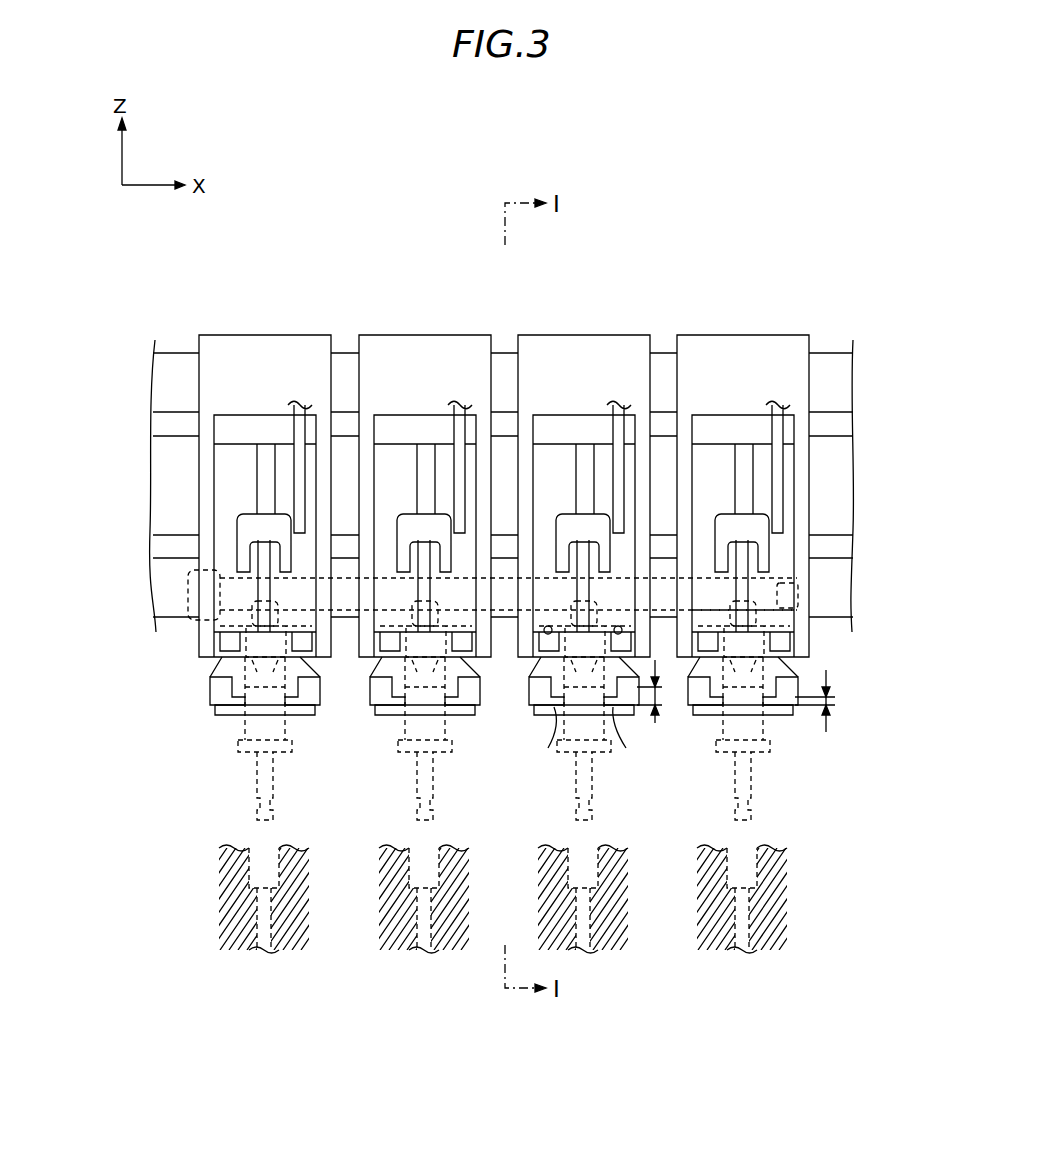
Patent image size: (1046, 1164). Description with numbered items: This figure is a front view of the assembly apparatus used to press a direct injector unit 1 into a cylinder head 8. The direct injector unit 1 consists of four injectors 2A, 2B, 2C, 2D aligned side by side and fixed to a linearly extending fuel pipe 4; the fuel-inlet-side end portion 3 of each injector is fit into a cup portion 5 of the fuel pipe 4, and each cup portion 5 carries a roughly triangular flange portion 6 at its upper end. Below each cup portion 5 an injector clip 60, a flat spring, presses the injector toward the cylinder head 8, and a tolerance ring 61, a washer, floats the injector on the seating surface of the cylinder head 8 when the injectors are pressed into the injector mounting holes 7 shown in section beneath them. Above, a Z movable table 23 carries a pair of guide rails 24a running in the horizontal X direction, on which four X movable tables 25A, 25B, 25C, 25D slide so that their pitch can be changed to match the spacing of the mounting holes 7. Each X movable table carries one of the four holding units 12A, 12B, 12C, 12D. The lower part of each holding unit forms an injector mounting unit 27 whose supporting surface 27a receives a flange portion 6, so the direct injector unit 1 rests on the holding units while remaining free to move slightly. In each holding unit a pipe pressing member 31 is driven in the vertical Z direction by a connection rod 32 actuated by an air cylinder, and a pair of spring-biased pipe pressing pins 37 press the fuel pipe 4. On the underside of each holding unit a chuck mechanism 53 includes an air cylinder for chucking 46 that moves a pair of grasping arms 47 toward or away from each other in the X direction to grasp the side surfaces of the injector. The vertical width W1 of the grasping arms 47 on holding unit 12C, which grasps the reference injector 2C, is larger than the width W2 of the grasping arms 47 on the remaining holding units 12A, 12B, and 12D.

The direct injector unit 1 is at (186, 584).
The first injector 2A is at (299, 780).
The second injector 2B is at (458, 780).
The third injector 2C is at (618, 780).
The fourth injector 2D is at (788, 786).
The fuel-inlet-side end portion 3 is at (816, 678).
The fuel pipe 4 is at (839, 580).
The cup portion 5 is at (800, 648).
The flange portion 6 is at (797, 628).
The injector mounting hole 7 is at (776, 899).
The cylinder head 8 is at (737, 911).
The holding unit 12A is at (247, 370).
The holding unit 12B is at (407, 370).
The holding unit 12C is at (566, 370).
The holding unit 12D is at (725, 370).
The Z movable table 23 is at (175, 380).
The guide rail 24a is at (158, 428).
The X movable table 25A is at (265, 459).
The X movable table 25B is at (425, 459).
The X movable table 25C is at (584, 459).
The X movable table 25D is at (743, 459).
The injector mounting unit 27 is at (199, 653).
The supporting surface 27a is at (201, 615).
The pipe pressing member 31 is at (815, 541).
The connection rod 32 is at (841, 467).
The pipe pressing pin 37 is at (555, 683).
The air cylinder for chucking 46 is at (229, 679).
The grasping arm 47 is at (268, 723).
The chuck mechanism 53 is at (227, 738).
The injector clip 60 is at (781, 709).
The tolerance ring 61 is at (777, 764).
The width of the paired grasping arms W1 is at (667, 721).
The width of the paired grasping arms W2 is at (859, 704).